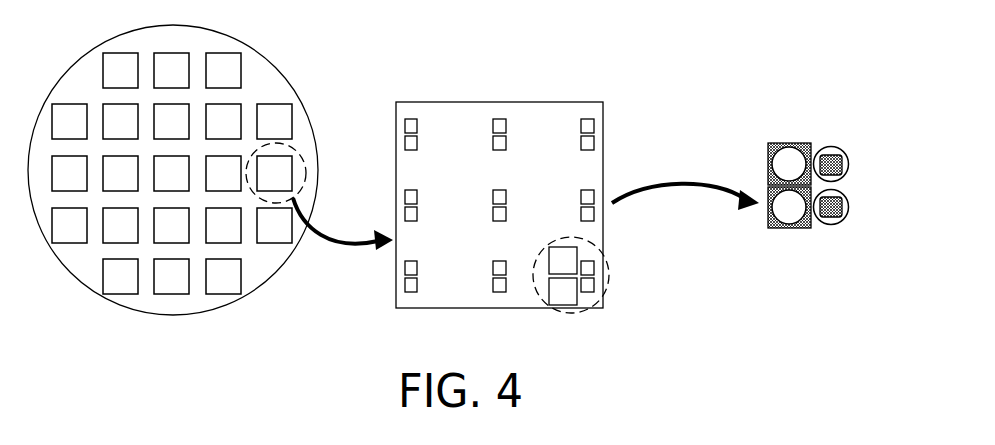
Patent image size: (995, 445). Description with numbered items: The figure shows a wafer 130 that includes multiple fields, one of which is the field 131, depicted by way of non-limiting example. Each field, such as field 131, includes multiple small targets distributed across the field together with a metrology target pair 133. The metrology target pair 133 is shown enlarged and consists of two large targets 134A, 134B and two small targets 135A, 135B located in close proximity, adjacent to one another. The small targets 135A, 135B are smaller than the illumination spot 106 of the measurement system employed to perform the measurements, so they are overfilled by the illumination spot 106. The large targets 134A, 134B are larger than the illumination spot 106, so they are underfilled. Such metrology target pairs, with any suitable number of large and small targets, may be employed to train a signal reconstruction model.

The wafer 130 is at (272, 65).
The field 131 is at (482, 102).
The metrology target pair 133 is at (612, 272).
The large target 134A is at (780, 143).
The large target 134B is at (777, 228).
The small target 135A is at (830, 152).
The small target 135B is at (830, 222).
The illumination spot 106 is at (848, 207).